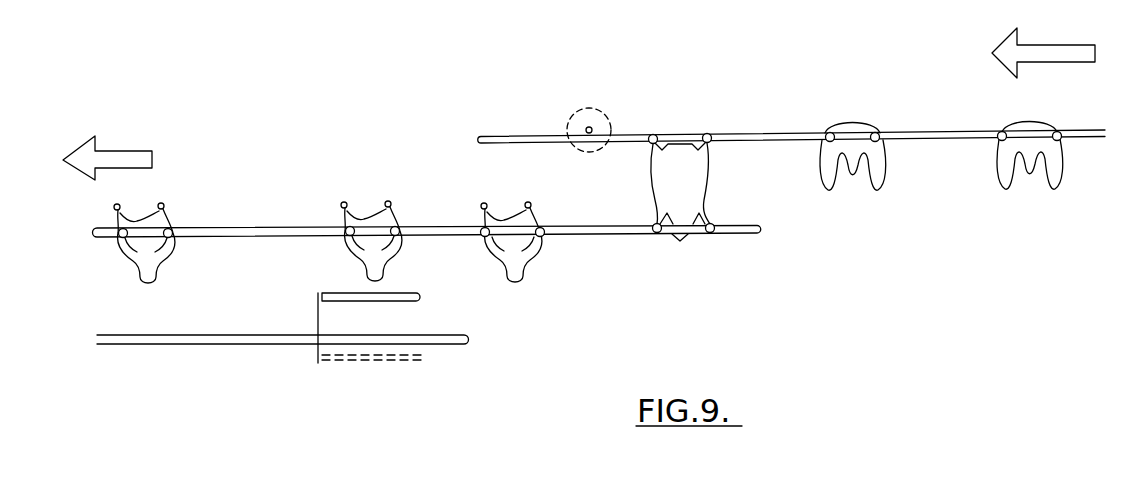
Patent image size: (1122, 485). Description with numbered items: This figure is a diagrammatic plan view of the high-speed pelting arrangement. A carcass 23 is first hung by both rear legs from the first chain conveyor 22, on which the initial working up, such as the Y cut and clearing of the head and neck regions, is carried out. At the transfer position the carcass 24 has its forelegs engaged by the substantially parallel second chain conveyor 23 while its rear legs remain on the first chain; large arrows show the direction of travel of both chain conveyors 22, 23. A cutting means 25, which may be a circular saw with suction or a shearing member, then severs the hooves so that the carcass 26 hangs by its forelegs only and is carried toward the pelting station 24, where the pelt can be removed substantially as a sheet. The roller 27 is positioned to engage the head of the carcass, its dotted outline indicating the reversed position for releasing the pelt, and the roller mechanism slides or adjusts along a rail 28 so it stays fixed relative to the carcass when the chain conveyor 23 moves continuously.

The first chain conveyor 22 is at (791, 101).
The second chain conveyor 23 is at (589, 189).
The carcass at transfer position 24 is at (357, 188).
The hoof cutting means 25 is at (585, 107).
The carcass suspended by forelegs 26 is at (513, 272).
The roller 27 is at (371, 350).
The rail 28 is at (283, 371).